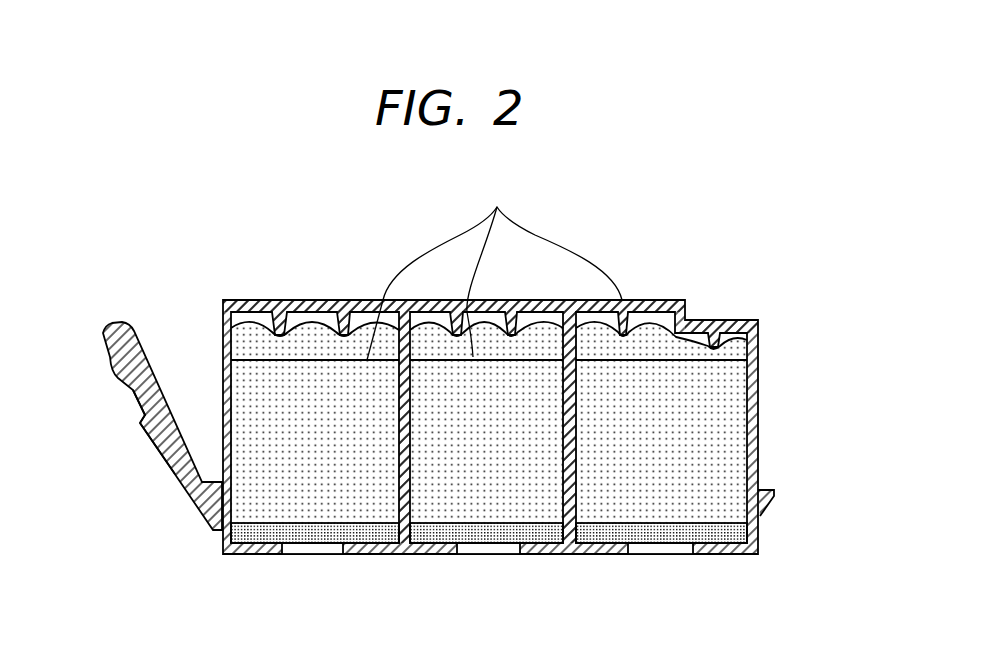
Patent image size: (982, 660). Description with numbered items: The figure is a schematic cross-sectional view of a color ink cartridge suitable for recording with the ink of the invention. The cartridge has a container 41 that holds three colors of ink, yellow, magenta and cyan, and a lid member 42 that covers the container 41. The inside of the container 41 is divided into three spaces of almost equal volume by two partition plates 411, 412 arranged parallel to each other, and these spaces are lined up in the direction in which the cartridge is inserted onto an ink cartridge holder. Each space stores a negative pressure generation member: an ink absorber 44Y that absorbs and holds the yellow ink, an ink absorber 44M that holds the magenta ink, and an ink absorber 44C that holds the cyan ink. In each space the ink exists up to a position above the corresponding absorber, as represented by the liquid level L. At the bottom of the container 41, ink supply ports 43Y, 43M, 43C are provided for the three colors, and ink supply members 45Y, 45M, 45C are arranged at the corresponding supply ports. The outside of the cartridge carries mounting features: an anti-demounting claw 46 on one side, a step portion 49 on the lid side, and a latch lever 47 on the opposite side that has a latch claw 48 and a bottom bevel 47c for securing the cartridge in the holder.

The container 41 is at (753, 422).
The lid member 42 is at (220, 307).
The ink supply port 43Y is at (318, 552).
The ink supply port 43M is at (497, 552).
The ink supply port 43C is at (667, 552).
The ink absorber 44Y is at (308, 325).
The ink absorber 44M is at (505, 312).
The ink absorber 44C is at (658, 333).
The ink supply member 45Y is at (259, 533).
The ink supply member 45M is at (435, 533).
The ink supply member 45C is at (607, 542).
The anti-demounting claw 46 is at (773, 495).
The latch lever 47 is at (120, 353).
The bottom bevel 47c is at (155, 453).
The latch claw 48 is at (140, 422).
The step portion 49 is at (720, 327).
The partition plate 411 is at (407, 353).
The partition plate 412 is at (552, 358).
The liquid level L is at (494, 272).